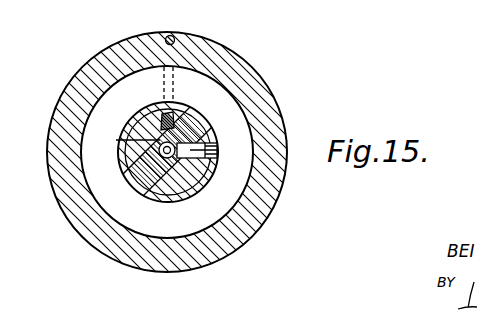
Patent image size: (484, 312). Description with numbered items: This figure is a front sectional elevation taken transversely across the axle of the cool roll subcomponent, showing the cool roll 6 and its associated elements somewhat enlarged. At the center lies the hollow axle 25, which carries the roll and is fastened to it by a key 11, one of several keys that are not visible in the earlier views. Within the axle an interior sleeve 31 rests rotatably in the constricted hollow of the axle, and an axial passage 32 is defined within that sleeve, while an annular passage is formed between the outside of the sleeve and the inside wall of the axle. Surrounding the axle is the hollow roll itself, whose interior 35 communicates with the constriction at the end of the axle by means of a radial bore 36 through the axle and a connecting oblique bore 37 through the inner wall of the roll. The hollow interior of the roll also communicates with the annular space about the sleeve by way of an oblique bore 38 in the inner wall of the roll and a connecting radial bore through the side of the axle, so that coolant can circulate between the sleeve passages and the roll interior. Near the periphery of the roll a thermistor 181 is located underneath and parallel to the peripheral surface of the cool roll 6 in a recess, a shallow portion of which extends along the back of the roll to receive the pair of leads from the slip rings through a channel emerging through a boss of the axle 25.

The cool roll 6 is at (80, 76).
The thermistor 181 is at (172, 42).
The interior of the roll 35 is at (227, 97).
The axle 25 is at (165, 178).
The key 11 is at (173, 118).
The interior sleeve 31 is at (217, 150).
The axial passage 32 is at (130, 142).
The radial bore 36 is at (187, 138).
The oblique bore 37 is at (210, 173).
The oblique bore 38 is at (128, 162).